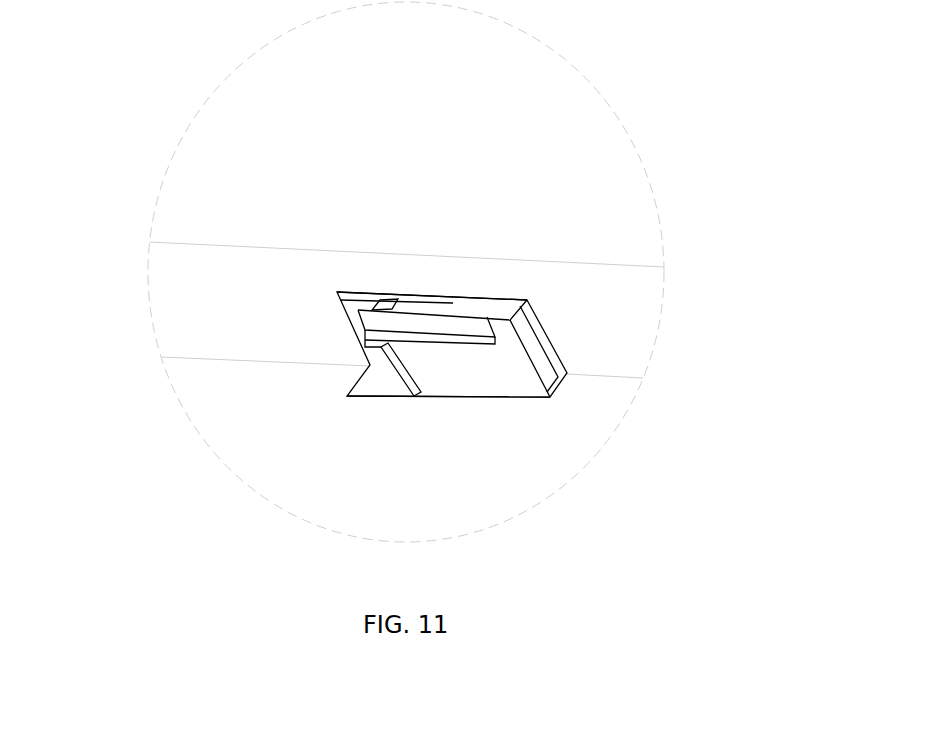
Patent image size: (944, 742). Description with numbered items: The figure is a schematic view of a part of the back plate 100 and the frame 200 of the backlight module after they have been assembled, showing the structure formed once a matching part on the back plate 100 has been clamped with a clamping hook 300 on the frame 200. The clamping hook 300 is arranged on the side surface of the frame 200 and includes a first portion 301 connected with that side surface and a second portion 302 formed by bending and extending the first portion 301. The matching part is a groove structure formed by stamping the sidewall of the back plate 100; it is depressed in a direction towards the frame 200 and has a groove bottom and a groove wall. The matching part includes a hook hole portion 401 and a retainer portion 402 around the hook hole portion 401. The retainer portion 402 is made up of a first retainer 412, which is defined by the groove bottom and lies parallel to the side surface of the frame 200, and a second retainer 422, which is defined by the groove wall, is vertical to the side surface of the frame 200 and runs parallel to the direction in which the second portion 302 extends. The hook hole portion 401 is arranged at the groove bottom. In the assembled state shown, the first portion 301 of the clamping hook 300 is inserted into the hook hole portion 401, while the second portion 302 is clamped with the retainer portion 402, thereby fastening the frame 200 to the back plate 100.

The back plate 100 is at (250, 258).
The frame 200 is at (387, 372).
The clamping hook 300 is at (583, 197).
The first portion 301 is at (373, 341).
The second portion 302 is at (433, 324).
The hook hole portion 401 is at (365, 307).
The retainer portion 402 is at (602, 286).
The first retainer 412 is at (512, 380).
The second retainer 422 is at (498, 303).